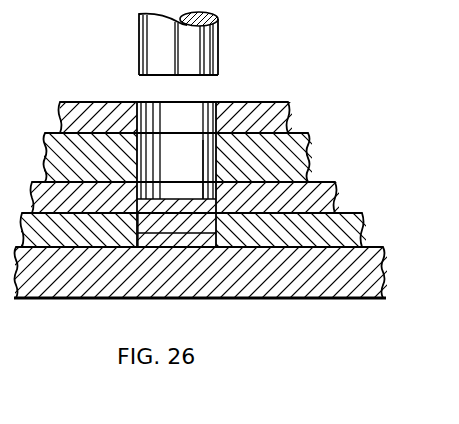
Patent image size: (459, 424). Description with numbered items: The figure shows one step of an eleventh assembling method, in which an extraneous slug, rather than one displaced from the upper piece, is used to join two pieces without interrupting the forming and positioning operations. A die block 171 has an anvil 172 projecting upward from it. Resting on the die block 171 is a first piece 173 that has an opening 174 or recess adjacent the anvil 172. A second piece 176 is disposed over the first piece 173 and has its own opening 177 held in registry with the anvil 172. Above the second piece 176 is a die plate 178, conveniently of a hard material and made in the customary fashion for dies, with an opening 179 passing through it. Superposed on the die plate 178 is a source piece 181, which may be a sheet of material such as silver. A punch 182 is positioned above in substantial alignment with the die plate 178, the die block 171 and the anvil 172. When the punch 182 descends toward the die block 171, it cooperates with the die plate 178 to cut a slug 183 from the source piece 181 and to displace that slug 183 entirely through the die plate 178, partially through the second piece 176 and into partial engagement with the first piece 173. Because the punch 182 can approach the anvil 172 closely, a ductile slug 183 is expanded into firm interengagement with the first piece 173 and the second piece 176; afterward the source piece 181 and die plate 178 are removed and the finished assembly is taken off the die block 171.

The die block 171 is at (370, 280).
The anvil 172 is at (140, 217).
The first piece 173 is at (350, 240).
The opening 174 is at (138, 222).
The second piece 176 is at (322, 208).
The opening 177 is at (140, 127).
The die plate 178 is at (303, 138).
The opening 179 is at (232, 160).
The source piece 181 is at (267, 107).
The punch 182 is at (197, 58).
The slug 183 is at (178, 214).